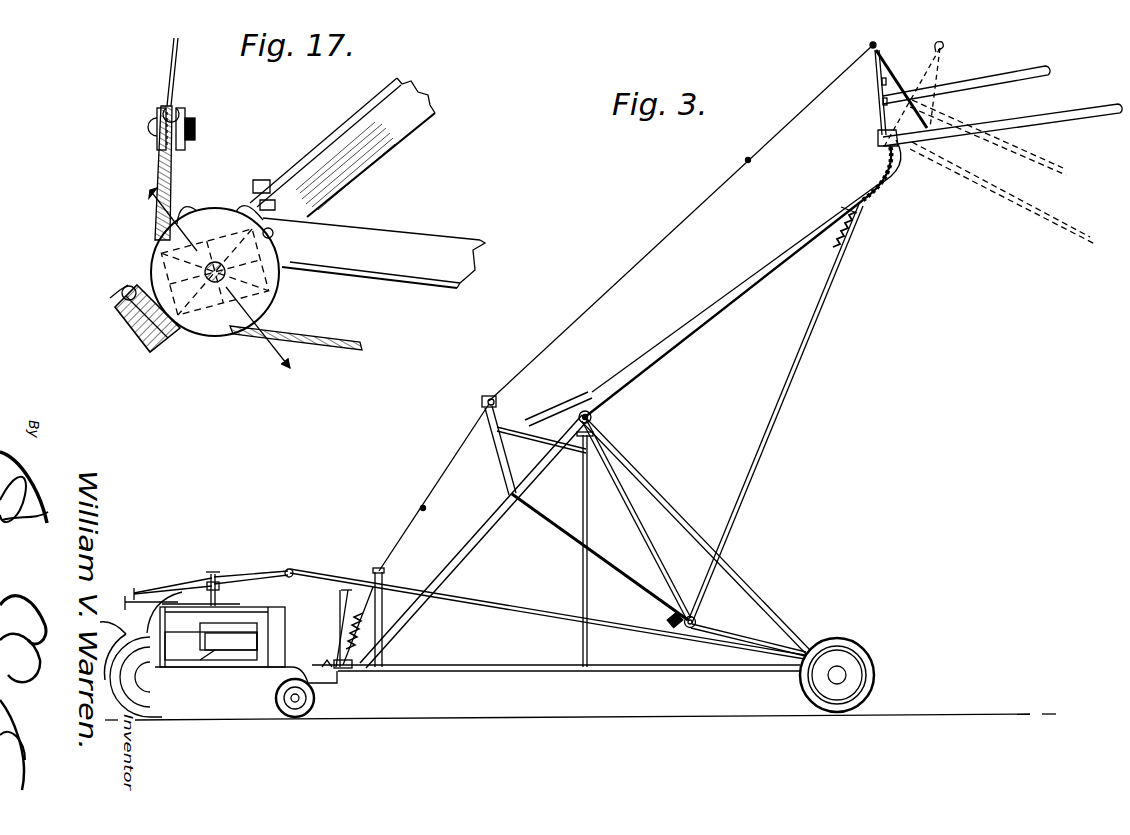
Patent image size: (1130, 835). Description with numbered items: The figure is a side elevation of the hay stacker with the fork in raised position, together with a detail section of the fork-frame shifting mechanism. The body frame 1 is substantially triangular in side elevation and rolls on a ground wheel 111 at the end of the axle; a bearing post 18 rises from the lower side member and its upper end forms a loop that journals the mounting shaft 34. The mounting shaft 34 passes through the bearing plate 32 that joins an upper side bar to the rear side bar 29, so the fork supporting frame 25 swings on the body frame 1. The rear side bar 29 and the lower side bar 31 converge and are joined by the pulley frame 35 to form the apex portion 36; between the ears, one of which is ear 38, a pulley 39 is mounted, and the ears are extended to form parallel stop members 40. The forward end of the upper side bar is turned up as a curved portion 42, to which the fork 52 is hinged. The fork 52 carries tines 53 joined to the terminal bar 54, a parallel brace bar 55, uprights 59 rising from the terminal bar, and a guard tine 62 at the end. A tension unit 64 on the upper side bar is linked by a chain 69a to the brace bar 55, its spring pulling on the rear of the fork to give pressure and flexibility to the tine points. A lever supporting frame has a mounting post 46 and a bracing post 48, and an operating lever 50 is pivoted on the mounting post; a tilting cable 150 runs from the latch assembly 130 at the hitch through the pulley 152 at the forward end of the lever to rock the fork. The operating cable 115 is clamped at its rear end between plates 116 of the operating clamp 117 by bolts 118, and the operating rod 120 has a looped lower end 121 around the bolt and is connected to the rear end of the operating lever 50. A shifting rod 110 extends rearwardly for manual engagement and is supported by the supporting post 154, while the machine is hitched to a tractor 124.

In FIG. 3, the body frame 1 is at (690, 674).
In FIG. 17, the bearing post 18 is at (223, 279).
In FIG. 3, the bearing post 18 is at (580, 591).
In FIG. 3, the fork supporting frame 25 is at (790, 409).
In FIG. 17, the rear side bar 29 is at (366, 149).
In FIG. 17, the lower side bar 31 is at (428, 242).
In FIG. 3, the bearing plate 32 is at (598, 410).
In FIG. 3, the mounting shaft 34 is at (596, 418).
In FIG. 17, the pulley frame 35 is at (122, 300).
In FIG. 17, the apex portion 36 is at (165, 348).
In FIG. 17, the ear 38 is at (152, 332).
In FIG. 17, the pulley 39 is at (279, 298).
In FIG. 3, the pulley 39 is at (698, 620).
In FIG. 17, the stop member 40 is at (194, 232).
In FIG. 3, the upwardly curved portion 42 is at (903, 175).
In FIG. 3, the mounting post 46 is at (516, 437).
In FIG. 3, the bracing post 48 is at (566, 421).
In FIG. 3, the operating lever 50 is at (504, 470).
In FIG. 3, the fork 52 is at (1058, 112).
In FIG. 3, the tine 53 is at (1090, 110).
In FIG. 3, the terminal bar 54 is at (880, 140).
In FIG. 3, the brace bar 55 is at (922, 124).
In FIG. 3, the upright 59 is at (876, 82).
In FIG. 3, the guard tine 62 is at (1040, 76).
In FIG. 3, the tension unit 64 is at (846, 238).
In FIG. 3, the chain 69a is at (887, 182).
In FIG. 3, the shifting rod 110 is at (490, 605).
In FIG. 3, the ground wheel 111 is at (875, 676).
In FIG. 17, the operating cable 115 is at (350, 342).
In FIG. 17, the plate 116 is at (186, 118).
In FIG. 17, the operating clamp 117 is at (155, 148).
In FIG. 3, the bolt 118 is at (672, 627).
In FIG. 3, the operating rod 120 is at (608, 571).
In FIG. 17, the looped lower end 121 is at (194, 136).
In FIG. 3, the tractor 124 is at (233, 670).
In FIG. 3, the latch assembly 130 is at (342, 641).
In FIG. 3, the tilting cable 150 is at (618, 286).
In FIG. 3, the pulley 152 is at (498, 400).
In FIG. 3, the supporting post 154 is at (386, 656).